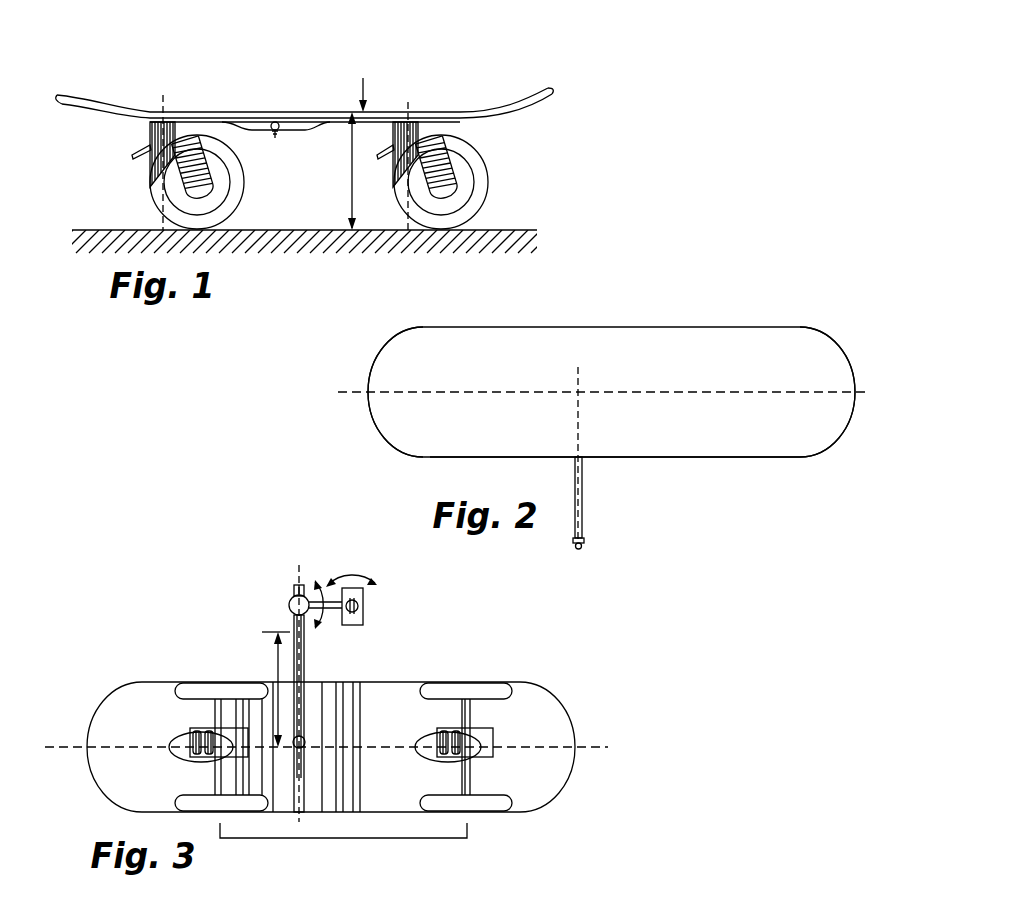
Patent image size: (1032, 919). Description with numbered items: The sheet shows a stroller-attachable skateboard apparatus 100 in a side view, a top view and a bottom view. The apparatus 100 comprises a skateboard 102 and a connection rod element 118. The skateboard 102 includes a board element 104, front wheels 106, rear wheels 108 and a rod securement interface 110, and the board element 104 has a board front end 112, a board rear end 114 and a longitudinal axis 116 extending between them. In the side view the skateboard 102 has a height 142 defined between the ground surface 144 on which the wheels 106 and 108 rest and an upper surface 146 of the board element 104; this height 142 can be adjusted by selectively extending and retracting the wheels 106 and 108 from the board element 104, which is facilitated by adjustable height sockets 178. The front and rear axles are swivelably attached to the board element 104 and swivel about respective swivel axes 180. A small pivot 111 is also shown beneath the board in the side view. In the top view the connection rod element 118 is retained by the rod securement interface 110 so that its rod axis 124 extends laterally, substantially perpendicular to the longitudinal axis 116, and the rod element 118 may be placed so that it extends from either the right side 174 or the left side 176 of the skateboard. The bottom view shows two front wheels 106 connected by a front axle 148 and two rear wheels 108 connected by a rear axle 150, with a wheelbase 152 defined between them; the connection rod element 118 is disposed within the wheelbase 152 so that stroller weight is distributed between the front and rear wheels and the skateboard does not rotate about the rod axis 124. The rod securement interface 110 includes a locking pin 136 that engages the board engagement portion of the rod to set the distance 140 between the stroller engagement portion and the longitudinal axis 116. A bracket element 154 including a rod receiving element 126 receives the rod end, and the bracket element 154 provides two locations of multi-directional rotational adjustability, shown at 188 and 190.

In FIG. 1, the stroller-attachable skateboard apparatus 100 is at (562, 50).
In FIG. 3, the stroller-attachable skateboard apparatus 100 is at (132, 645).
In FIG. 1, the skateboard 102 is at (562, 164).
In FIG. 1, the board element 104 is at (311, 112).
In FIG. 1, the front wheels 106 is at (152, 210).
In FIG. 1, the rear wheels 108 is at (484, 218).
In FIG. 1, the rod securement interface 110 is at (252, 127).
In FIG. 1, the pivot 111 is at (277, 120).
In FIG. 1, the board front end 112 is at (60, 106).
In FIG. 2, the board front end 112 is at (367, 387).
In FIG. 1, the board rear end 114 is at (560, 92).
In FIG. 2, the board rear end 114 is at (852, 378).
In FIG. 2, the longitudinal axis 116 is at (350, 392).
In FIG. 3, the longitudinal axis 116 is at (589, 745).
In FIG. 2, the connection rod element 118 is at (583, 488).
In FIG. 3, the connection rod element 118 is at (306, 670).
In FIG. 2, the rod axis 124 is at (583, 556).
In FIG. 3, the rod receiving element 126 is at (292, 600).
In FIG. 1, the locking pin 136 is at (276, 140).
In FIG. 3, the locking pin 136 is at (306, 742).
In FIG. 3, the distance 140 is at (276, 682).
In FIG. 1, the height 142 is at (352, 172).
In FIG. 1, the ground surface 144 is at (538, 229).
In FIG. 1, the upper surface 146 is at (373, 80).
In FIG. 3, the front axle 148 is at (215, 722).
In FIG. 3, the rear axle 150 is at (470, 768).
In FIG. 3, the wheelbase 152 is at (330, 840).
In FIG. 3, the bracket element 154 is at (388, 608).
In FIG. 2, the right side 174 is at (678, 327).
In FIG. 2, the left side 176 is at (683, 458).
In FIG. 1, the adjustable height sockets 178 is at (150, 121).
In FIG. 1, the swivel axes 180 is at (162, 96).
In FIG. 3, the location of rotational adjustability 188 is at (325, 615).
In FIG. 3, the location of rotational adjustability 190 is at (352, 578).